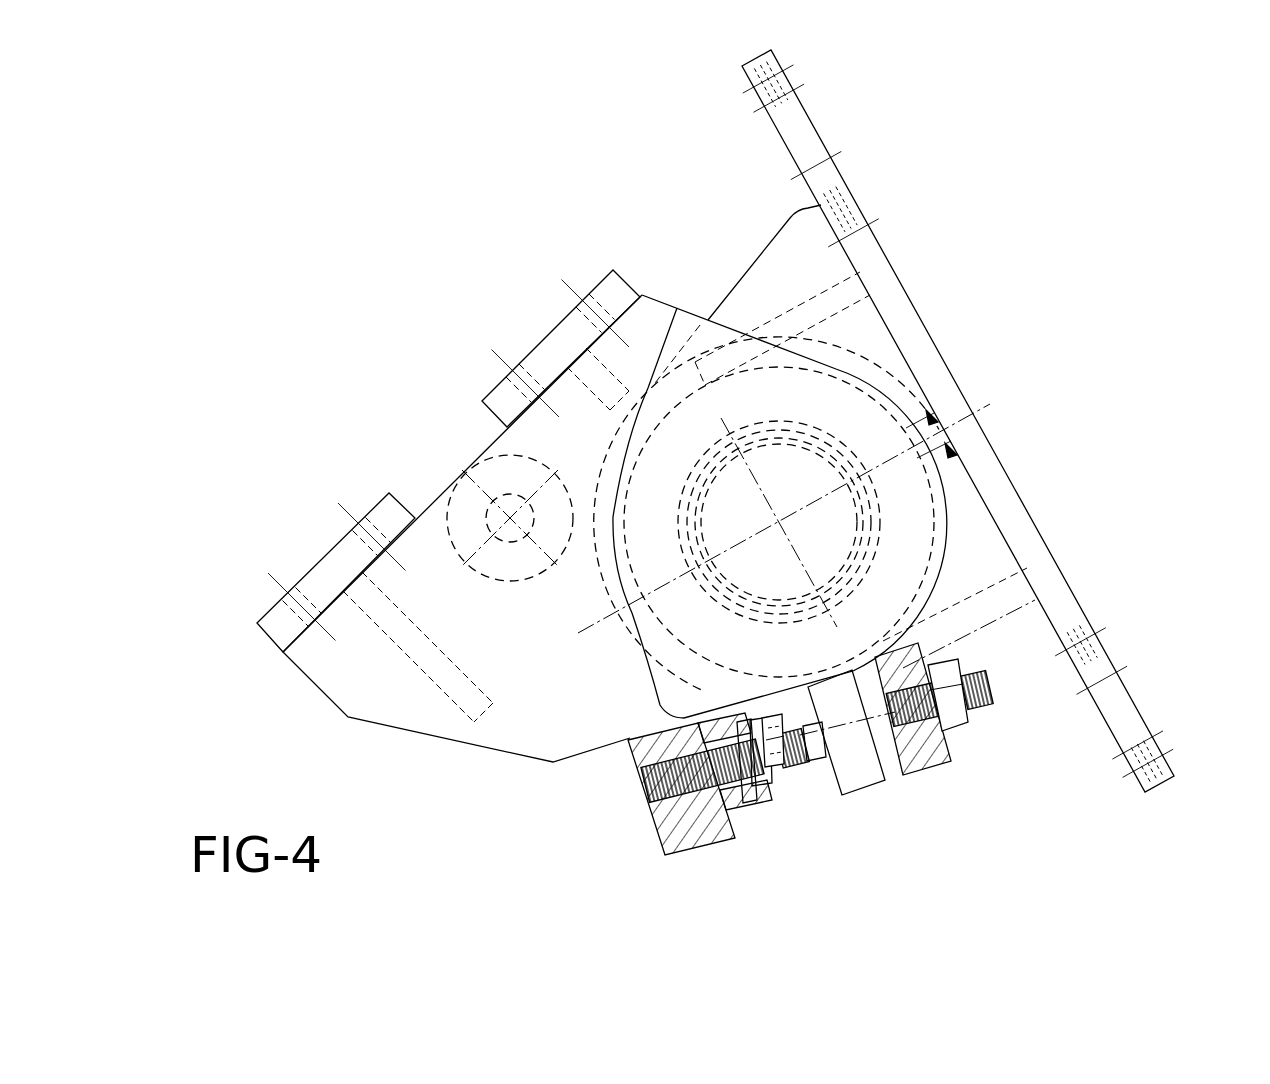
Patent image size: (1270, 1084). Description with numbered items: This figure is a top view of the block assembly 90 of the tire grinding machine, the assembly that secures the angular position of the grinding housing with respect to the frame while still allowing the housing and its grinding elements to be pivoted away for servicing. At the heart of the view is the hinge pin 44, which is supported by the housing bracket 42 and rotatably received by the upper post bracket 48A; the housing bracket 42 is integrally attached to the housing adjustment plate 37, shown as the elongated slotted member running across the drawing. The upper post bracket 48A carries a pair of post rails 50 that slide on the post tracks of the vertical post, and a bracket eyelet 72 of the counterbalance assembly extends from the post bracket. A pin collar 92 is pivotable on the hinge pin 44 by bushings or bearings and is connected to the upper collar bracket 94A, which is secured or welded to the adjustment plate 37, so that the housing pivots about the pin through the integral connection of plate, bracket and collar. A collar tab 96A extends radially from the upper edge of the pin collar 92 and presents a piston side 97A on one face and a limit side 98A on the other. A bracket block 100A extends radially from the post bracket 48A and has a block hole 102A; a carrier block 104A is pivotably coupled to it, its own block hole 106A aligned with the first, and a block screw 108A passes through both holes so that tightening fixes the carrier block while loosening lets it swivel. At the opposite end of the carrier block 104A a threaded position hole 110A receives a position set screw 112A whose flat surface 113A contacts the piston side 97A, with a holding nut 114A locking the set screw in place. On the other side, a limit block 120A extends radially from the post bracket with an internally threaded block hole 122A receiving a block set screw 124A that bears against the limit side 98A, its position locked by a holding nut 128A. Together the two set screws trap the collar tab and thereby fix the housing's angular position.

The housing adjustment plate 37 is at (814, 124).
The housing bracket 42 is at (962, 530).
The hinge pin 44 is at (787, 493).
The upper post bracket 48A is at (530, 723).
The post rails 50 is at (278, 628).
The bracket eyelet 72 is at (447, 533).
The block assembly 90 is at (650, 916).
The pin collar 92 is at (608, 588).
The upper collar bracket 94A is at (963, 597).
The upper collar tab 96A is at (858, 783).
The piston side 97A is at (800, 690).
The limit side 98A is at (912, 768).
The bracket block 100A is at (687, 840).
The block hole 102A is at (737, 807).
The carrier block 104A is at (727, 728).
The block hole 106A is at (725, 812).
The block screw 108A is at (797, 777).
The position hole 110A is at (697, 722).
The position set screw 112A is at (821, 765).
The flat surface 113A is at (787, 703).
The holding nut 114A is at (777, 782).
The limit block 120A is at (952, 768).
The block hole 122A is at (932, 763).
The block set screw 124A is at (980, 673).
The holding nut 128A is at (940, 668).